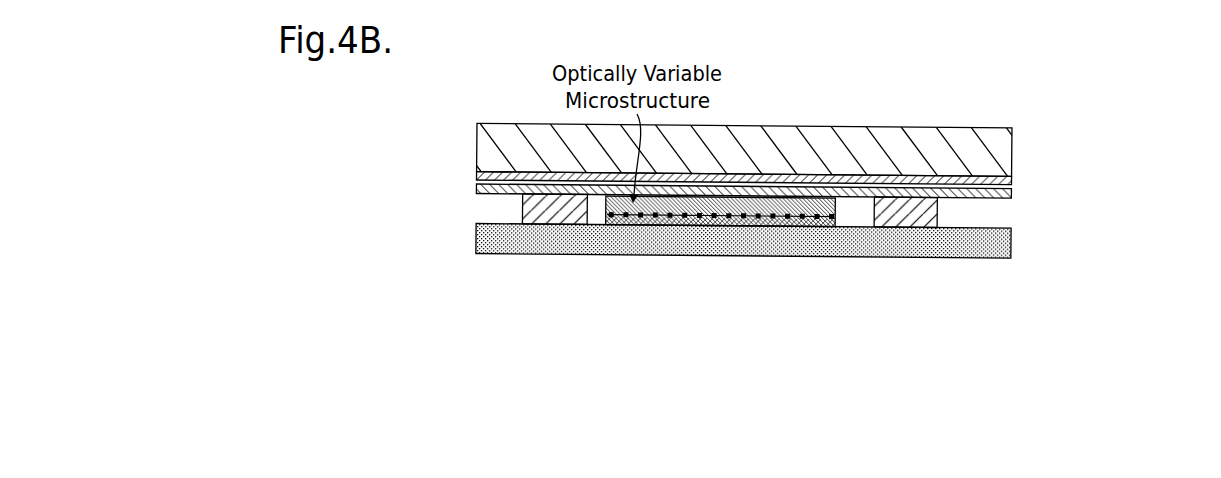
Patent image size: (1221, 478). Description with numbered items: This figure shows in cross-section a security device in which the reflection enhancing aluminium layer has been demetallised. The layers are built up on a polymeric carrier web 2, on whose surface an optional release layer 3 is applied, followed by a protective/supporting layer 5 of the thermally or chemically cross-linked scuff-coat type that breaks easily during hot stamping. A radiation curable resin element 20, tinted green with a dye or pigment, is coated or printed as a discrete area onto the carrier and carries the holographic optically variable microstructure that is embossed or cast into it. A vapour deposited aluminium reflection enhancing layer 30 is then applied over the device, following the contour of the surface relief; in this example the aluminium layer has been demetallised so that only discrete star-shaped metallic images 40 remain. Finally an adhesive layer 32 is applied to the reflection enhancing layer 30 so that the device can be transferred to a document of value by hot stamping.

The polymeric carrier web 2 is at (995, 150).
The release layer 3 is at (522, 178).
The protective/supporting layer 5 is at (477, 188).
The radiation curable resin element 20 is at (810, 207).
The reflection enhancing layer 30 is at (715, 224).
The metallic images 40 is at (558, 211).
The adhesive layer 32 is at (992, 248).